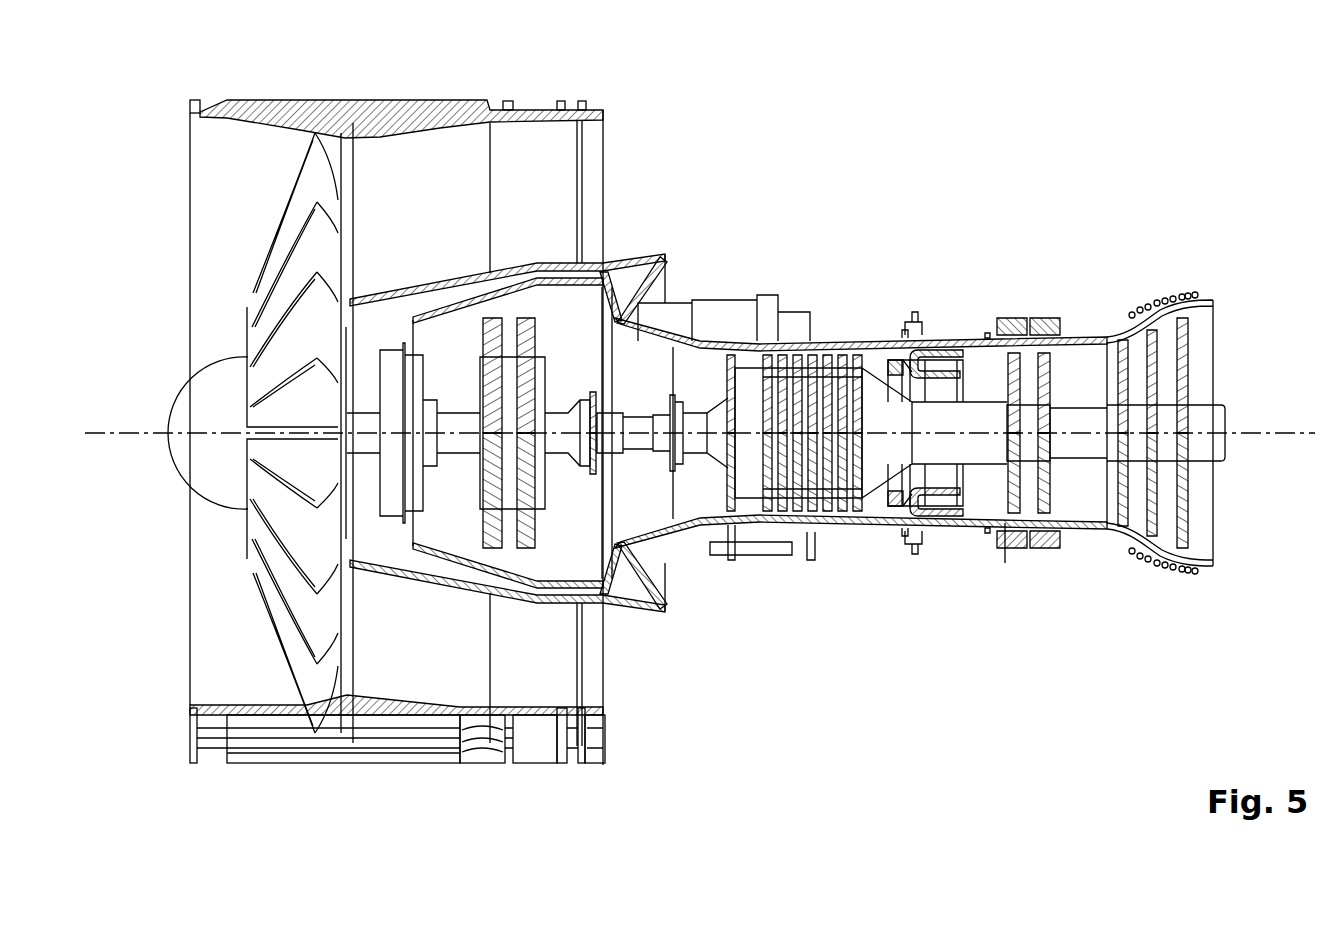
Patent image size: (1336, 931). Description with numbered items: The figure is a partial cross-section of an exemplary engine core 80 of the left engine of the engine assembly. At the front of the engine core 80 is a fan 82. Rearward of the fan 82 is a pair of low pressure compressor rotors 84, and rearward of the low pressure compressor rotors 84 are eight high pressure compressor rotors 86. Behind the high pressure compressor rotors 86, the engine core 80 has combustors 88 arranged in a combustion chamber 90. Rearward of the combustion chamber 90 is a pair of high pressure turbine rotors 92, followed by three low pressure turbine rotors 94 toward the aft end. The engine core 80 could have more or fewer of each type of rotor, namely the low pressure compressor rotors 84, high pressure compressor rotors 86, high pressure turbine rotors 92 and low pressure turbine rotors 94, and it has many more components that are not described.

The engine core 80 is at (722, 152).
The fan 82 is at (270, 550).
The low pressure compressor rotors 84 is at (473, 546).
The high pressure compressor rotors 86 is at (872, 513).
The combustors 88 is at (943, 356).
The combustion chamber 90 is at (987, 500).
The high pressure turbine rotors 92 is at (1070, 317).
The low pressure turbine rotors 94 is at (1207, 292).